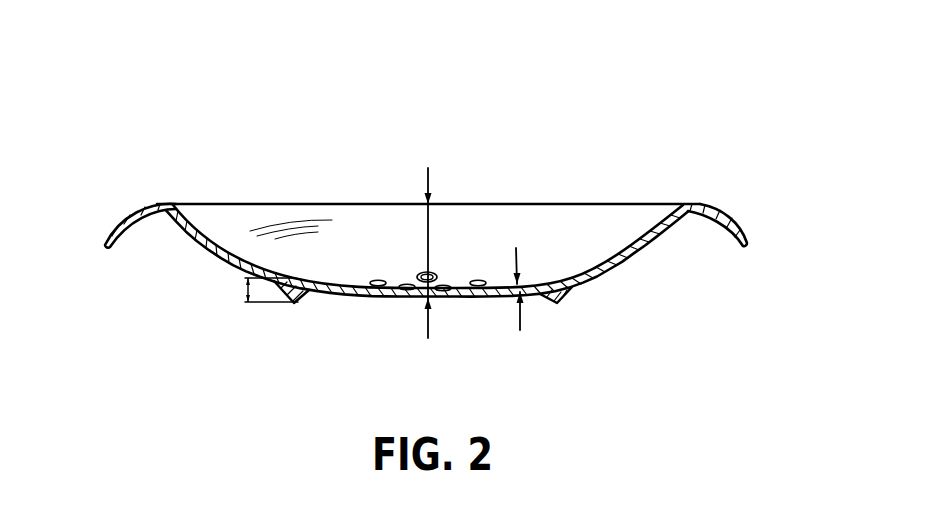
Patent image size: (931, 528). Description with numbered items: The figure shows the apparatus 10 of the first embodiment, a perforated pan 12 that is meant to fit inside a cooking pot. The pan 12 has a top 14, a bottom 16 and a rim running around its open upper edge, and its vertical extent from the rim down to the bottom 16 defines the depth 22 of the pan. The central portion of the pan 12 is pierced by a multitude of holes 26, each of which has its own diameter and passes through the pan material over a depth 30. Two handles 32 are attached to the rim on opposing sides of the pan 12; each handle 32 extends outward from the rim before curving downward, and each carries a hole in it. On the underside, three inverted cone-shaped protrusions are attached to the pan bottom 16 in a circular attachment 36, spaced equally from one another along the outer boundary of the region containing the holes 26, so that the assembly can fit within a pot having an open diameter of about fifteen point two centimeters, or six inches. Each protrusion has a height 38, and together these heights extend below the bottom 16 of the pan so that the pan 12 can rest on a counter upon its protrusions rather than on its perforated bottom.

The apparatus 10 is at (228, 89).
The pan 12 is at (476, 183).
The top 14 is at (538, 204).
The bottom 16 is at (442, 298).
The depth 22 is at (425, 247).
The holes 26 is at (394, 297).
The depth 30 is at (521, 288).
The handles 32 is at (125, 210).
The feet 36 is at (306, 293).
The height 38 is at (245, 297).